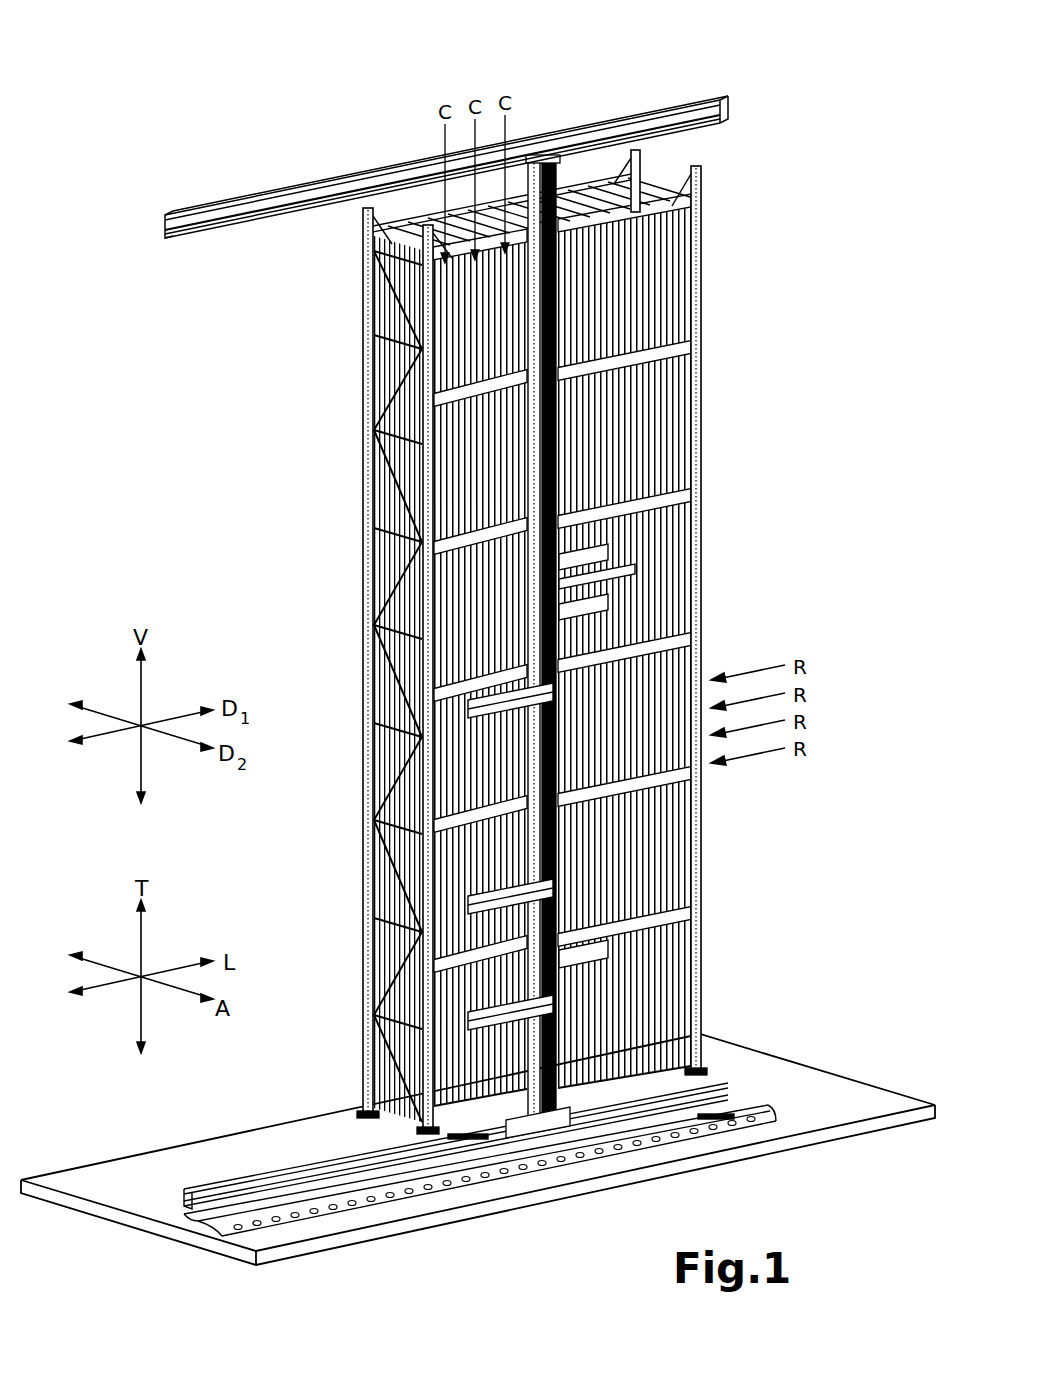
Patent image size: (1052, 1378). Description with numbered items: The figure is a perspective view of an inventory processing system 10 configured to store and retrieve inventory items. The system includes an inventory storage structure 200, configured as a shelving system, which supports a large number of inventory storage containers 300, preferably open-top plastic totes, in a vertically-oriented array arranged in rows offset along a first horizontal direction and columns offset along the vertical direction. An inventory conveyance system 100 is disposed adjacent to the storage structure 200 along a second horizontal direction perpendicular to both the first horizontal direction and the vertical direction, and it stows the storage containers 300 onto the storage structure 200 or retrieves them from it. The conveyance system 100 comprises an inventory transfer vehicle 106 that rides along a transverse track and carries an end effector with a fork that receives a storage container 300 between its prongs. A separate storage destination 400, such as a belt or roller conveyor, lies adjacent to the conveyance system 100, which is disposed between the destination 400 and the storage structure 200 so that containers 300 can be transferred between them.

The inventory processing system 10 is at (186, 101).
The inventory conveyance system 100 is at (212, 200).
The inventory storage structure 200 is at (355, 339).
The inventory storage container 300 is at (683, 478).
The inventory transfer vehicle 106 is at (495, 1014).
The separate storage destination 400 is at (392, 1171).